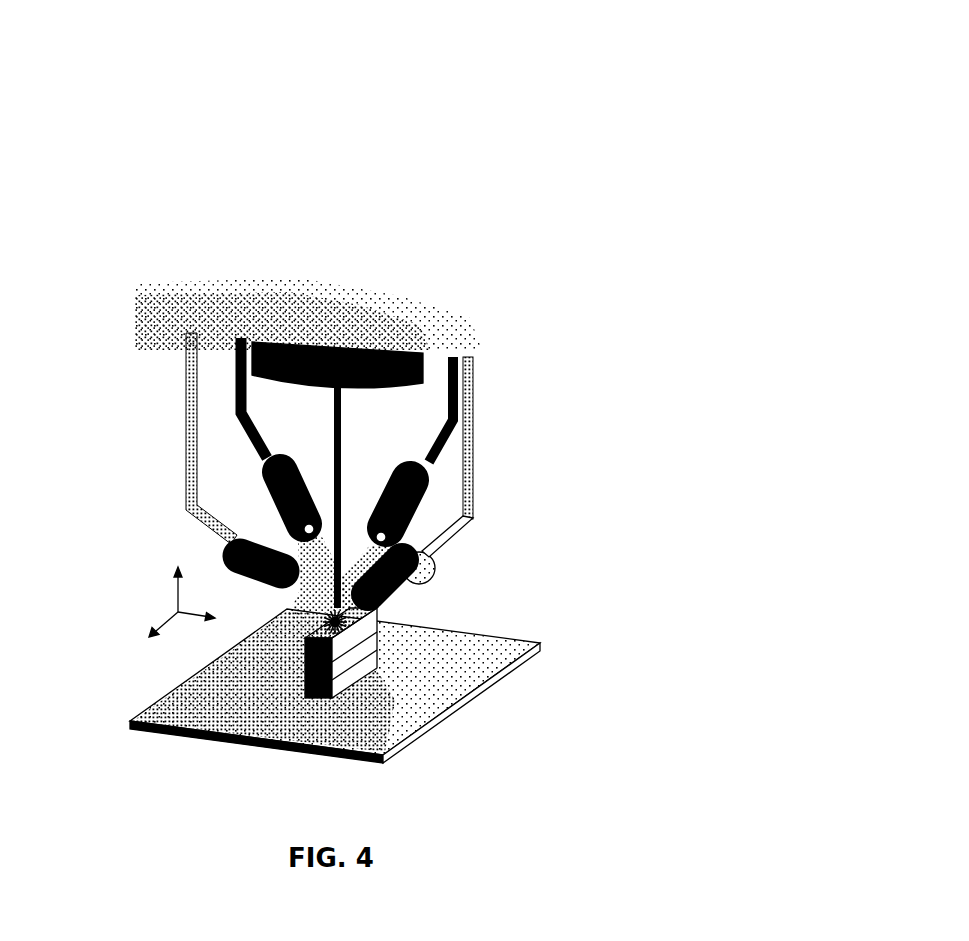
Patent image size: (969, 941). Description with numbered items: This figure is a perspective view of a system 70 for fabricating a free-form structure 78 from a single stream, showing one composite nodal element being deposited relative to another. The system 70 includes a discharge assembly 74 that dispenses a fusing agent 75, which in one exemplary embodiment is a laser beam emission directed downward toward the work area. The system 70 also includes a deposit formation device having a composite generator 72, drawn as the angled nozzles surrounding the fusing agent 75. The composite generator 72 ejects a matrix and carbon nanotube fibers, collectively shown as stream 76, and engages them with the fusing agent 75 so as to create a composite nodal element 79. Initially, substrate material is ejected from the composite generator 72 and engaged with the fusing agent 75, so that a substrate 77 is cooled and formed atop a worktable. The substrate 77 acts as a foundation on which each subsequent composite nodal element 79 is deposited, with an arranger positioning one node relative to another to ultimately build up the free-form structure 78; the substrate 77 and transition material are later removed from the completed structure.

The system 70 is at (710, 146).
The composite generator 72 is at (437, 499).
The discharge assembly 74 is at (337, 347).
The fusing agent 75 is at (347, 444).
The stream 76 is at (285, 607).
The substrate 77 is at (442, 692).
The free-form structure 78 is at (385, 640).
The composite nodal element 79 is at (303, 643).